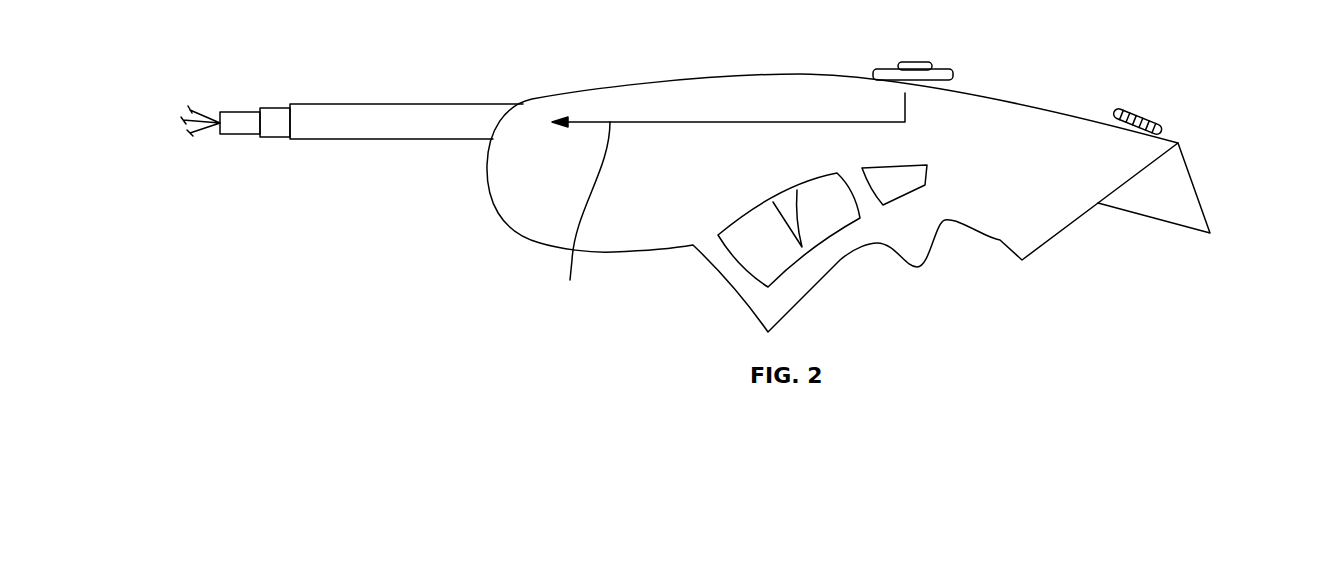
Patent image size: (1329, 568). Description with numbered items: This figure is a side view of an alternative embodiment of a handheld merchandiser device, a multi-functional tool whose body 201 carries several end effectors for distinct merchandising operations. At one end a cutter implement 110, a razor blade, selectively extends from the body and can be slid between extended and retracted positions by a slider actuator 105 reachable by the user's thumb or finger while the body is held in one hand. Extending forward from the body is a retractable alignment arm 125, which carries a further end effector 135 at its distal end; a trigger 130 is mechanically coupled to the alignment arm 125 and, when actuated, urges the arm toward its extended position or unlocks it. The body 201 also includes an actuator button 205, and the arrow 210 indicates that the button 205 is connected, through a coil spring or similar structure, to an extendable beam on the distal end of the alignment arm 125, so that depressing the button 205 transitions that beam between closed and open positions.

The slider actuator 105 is at (1138, 113).
The cutter implement 110 is at (1195, 183).
The retractable alignment arm 125 is at (357, 104).
The trigger 130 is at (800, 218).
The end effector 135 is at (195, 108).
The body 201 is at (485, 185).
The actuator button 205 is at (913, 63).
The arrow 210 is at (580, 216).